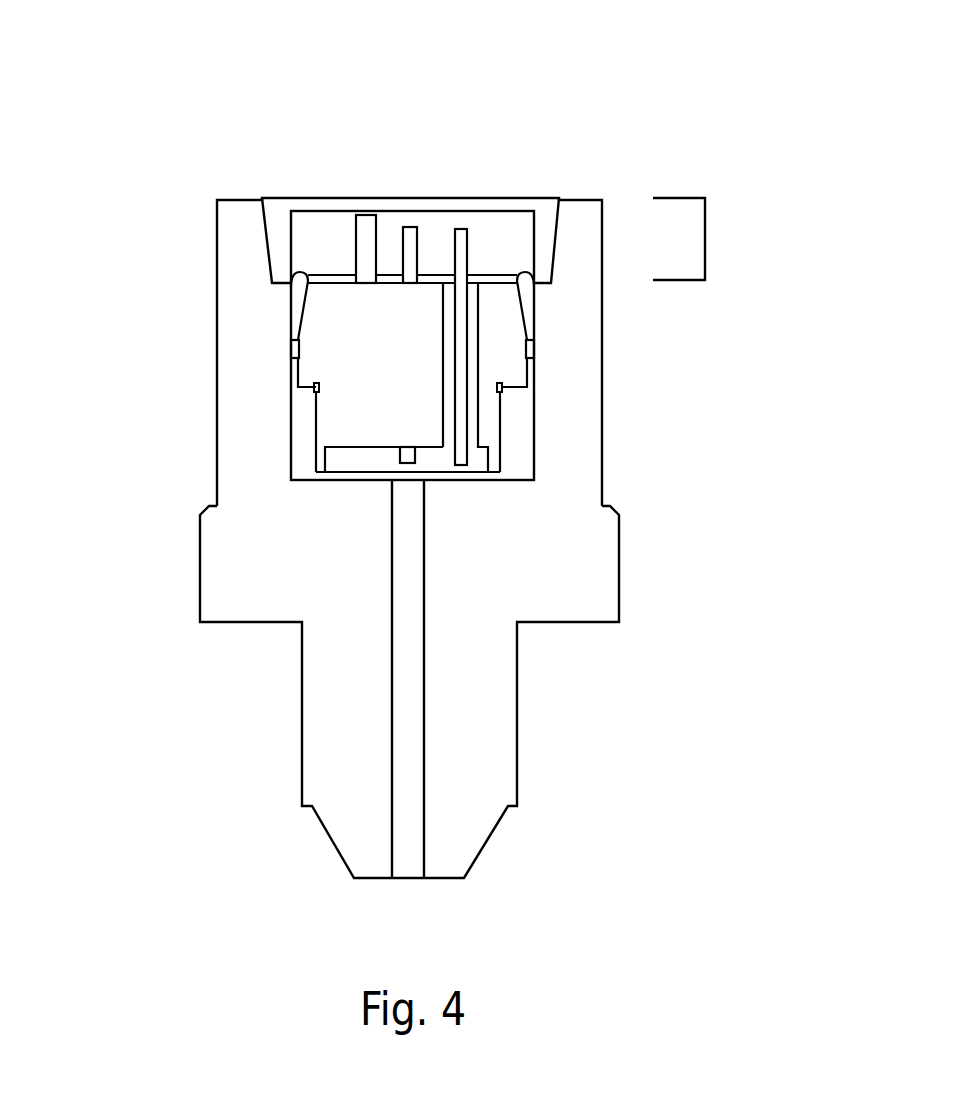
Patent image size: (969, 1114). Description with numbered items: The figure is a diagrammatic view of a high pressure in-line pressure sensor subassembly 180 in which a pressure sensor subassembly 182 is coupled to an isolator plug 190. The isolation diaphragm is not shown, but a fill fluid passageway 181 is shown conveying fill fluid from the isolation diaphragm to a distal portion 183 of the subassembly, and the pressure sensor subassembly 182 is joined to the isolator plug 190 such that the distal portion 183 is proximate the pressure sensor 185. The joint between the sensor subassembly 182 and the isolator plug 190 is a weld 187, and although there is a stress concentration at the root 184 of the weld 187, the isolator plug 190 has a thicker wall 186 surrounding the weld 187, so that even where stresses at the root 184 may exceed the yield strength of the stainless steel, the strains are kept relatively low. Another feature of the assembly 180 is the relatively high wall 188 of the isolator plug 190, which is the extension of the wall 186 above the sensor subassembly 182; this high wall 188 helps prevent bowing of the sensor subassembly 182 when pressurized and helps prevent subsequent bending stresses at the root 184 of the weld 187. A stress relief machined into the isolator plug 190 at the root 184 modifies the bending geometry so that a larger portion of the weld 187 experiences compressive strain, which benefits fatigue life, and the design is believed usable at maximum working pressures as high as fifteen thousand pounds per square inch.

The sensor subassembly 180 is at (670, 89).
The fill fluid passageway 181 is at (413, 734).
The pressure sensor subassembly 182 is at (541, 381).
The distal portion 183 is at (411, 528).
The root of weld 184 is at (286, 351).
The pressure sensor 185 is at (367, 462).
The thick wall 186 is at (606, 412).
The weld 187 is at (286, 302).
The high wall 188 is at (708, 238).
The isolator plug 190 is at (623, 547).